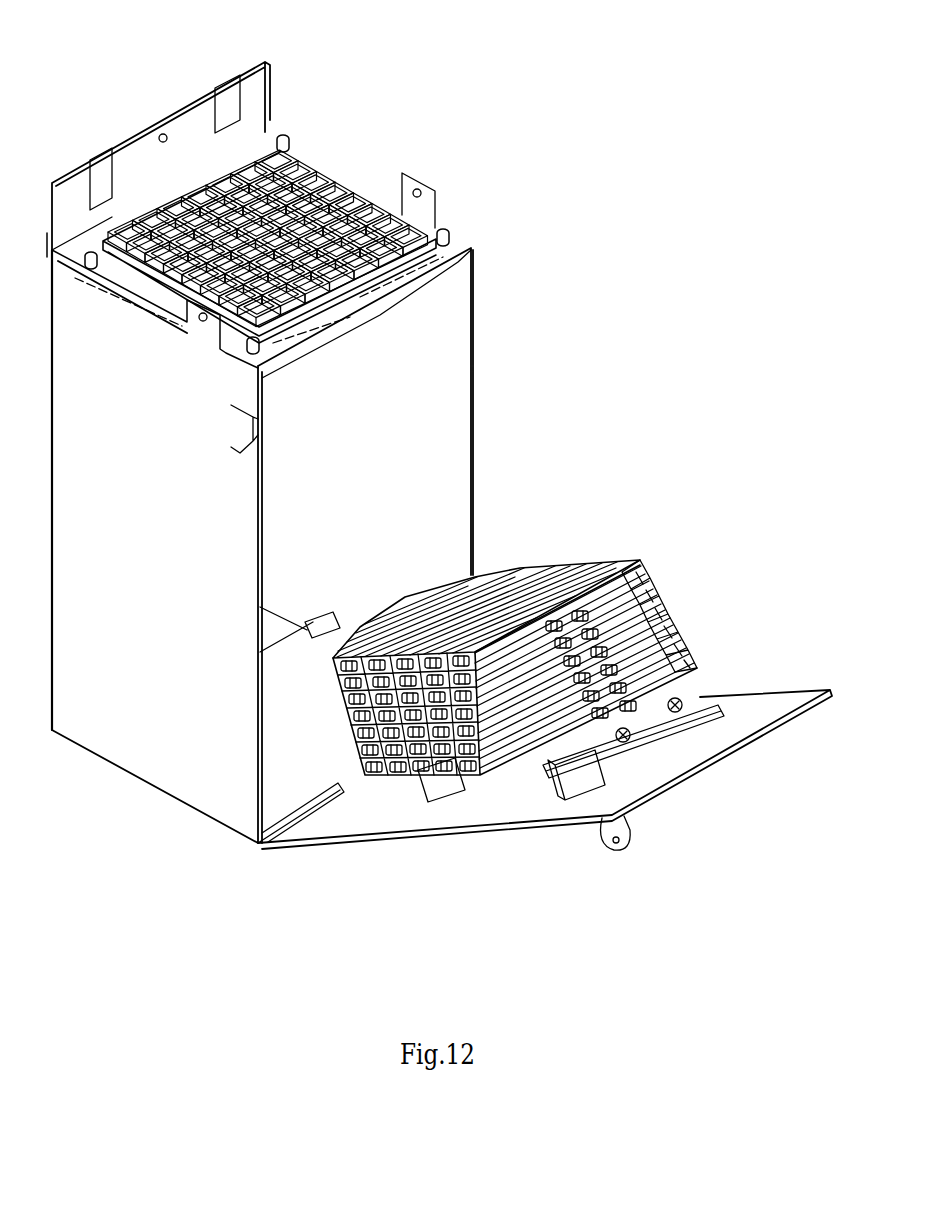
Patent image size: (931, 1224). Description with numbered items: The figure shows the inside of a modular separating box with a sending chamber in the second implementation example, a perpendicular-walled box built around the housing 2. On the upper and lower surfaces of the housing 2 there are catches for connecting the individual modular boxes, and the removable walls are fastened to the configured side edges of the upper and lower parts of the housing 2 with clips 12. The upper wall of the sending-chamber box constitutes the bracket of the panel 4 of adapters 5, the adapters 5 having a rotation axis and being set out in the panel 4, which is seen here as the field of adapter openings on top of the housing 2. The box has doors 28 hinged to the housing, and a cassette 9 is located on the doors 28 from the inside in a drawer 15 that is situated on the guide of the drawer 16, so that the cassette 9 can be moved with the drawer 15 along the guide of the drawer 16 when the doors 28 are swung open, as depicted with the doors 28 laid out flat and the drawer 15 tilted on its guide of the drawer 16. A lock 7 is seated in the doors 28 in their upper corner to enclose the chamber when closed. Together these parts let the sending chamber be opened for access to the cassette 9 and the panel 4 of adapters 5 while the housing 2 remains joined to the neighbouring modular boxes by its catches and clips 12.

The housing 2 is at (380, 480).
The panel 4 is at (358, 290).
The adapter 5 is at (258, 490).
The lock 7 is at (630, 810).
The cassette 9 is at (563, 563).
The clip 12 is at (455, 226).
The drawer 15 is at (655, 560).
The guide of the drawer 16 is at (688, 640).
The doors 28 is at (692, 753).